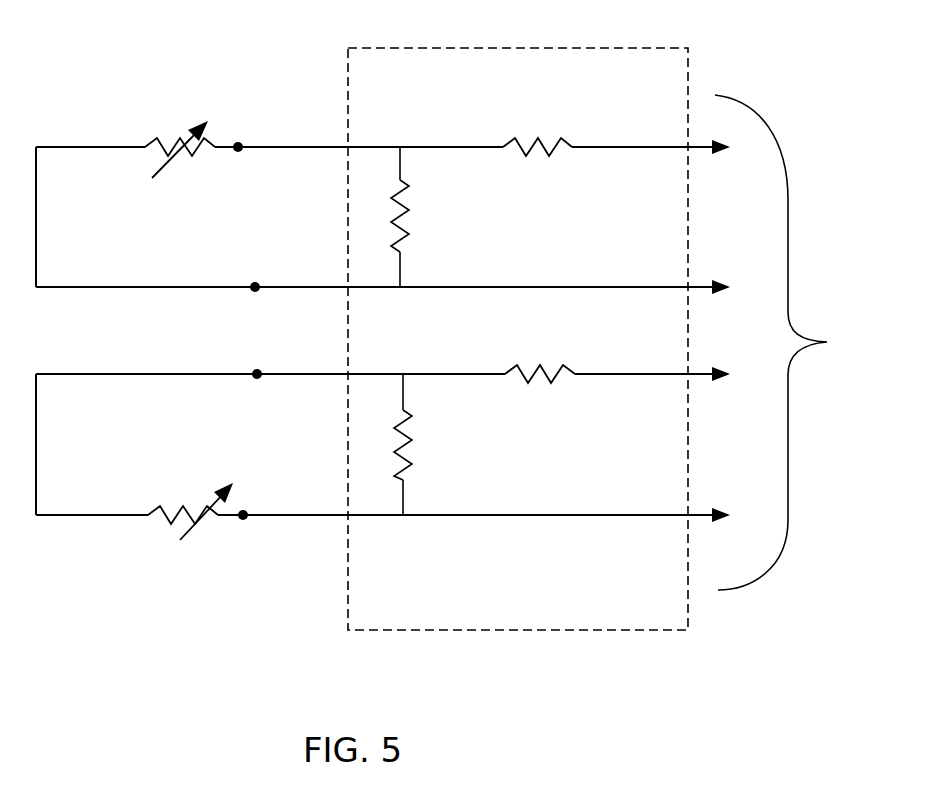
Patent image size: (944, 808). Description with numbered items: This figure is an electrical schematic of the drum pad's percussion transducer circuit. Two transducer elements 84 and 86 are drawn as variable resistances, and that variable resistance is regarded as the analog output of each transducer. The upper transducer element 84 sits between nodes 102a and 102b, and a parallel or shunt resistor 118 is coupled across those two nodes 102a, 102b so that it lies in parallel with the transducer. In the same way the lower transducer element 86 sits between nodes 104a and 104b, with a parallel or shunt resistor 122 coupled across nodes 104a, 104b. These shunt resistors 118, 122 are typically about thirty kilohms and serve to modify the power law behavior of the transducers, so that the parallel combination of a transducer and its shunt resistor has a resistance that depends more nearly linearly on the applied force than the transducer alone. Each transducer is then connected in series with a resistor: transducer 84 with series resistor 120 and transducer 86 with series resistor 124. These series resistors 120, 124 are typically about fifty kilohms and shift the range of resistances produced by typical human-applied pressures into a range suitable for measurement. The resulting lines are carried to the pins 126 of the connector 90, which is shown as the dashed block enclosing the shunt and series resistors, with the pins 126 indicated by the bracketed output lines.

The transducer element 84 is at (160, 130).
The transducer element 86 is at (150, 528).
The connector 90 is at (428, 632).
The node 102a is at (238, 147).
The node 102b is at (255, 287).
The node 104a is at (257, 374).
The node 104b is at (243, 515).
The parallel or shunt resistor 118 is at (408, 222).
The series resistor 120 is at (528, 132).
The parallel or shunt resistor 122 is at (412, 442).
The series resistor 124 is at (547, 385).
The pins 126 is at (804, 342).